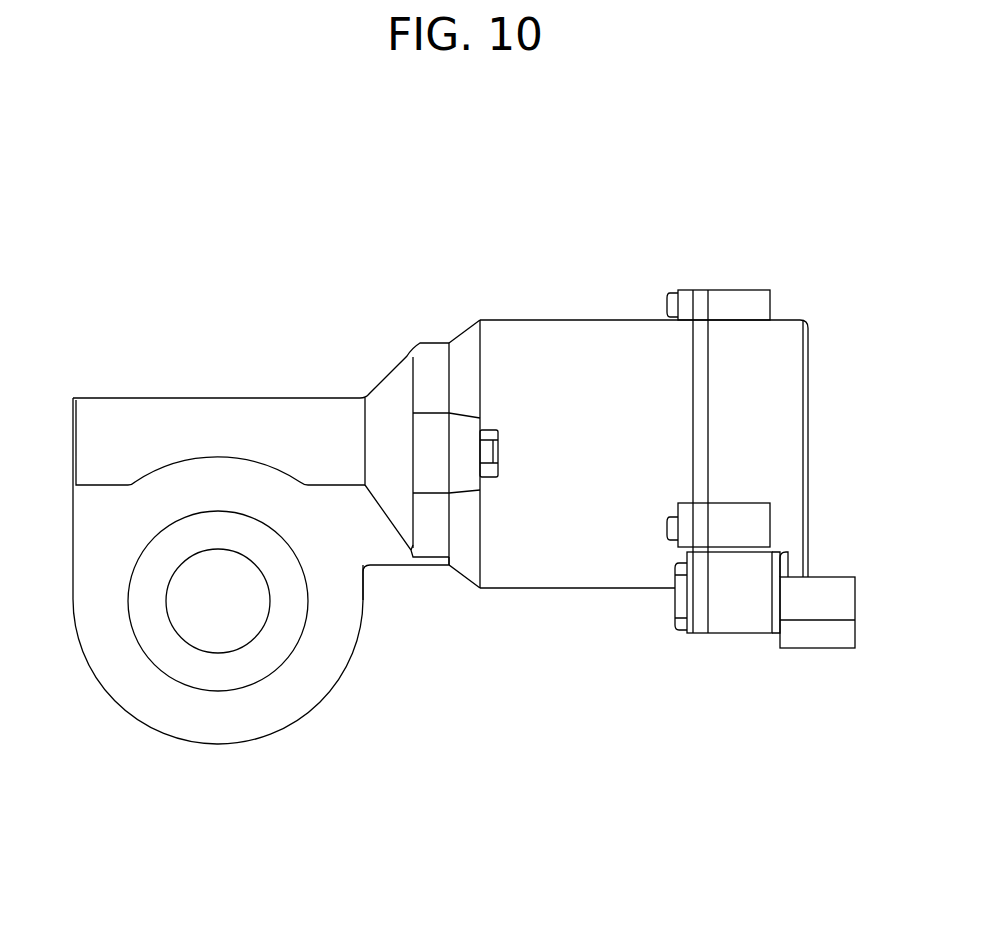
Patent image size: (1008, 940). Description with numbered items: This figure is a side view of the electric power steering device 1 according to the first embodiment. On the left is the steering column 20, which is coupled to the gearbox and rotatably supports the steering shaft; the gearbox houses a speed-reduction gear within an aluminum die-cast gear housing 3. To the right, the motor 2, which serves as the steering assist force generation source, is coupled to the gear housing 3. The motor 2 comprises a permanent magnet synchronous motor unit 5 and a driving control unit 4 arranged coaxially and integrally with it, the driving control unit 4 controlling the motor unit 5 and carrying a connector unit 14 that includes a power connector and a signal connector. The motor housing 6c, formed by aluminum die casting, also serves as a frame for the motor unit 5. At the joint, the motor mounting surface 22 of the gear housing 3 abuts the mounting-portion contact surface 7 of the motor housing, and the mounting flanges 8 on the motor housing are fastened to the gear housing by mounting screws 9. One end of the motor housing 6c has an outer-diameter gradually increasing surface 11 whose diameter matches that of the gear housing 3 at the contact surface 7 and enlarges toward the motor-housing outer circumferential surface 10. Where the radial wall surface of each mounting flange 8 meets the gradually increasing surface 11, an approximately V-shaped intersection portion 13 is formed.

The electric power steering device 1 is at (447, 708).
The motor 2 is at (525, 700).
The gear housing 3 is at (432, 353).
The driving control unit 4 is at (743, 340).
The motor unit 5 is at (553, 338).
The motor housing 6c is at (492, 390).
The mounting-portion contact surface 7 is at (448, 533).
The mounting flanges 8 is at (466, 470).
The mounting screws 9 is at (495, 430).
The motor-housing outer circumferential surface 10 is at (503, 362).
The outer-diameter gradually increasing surface 11 is at (458, 367).
The intersection portion 13 is at (407, 355).
The connector unit 14 is at (740, 623).
The steering column 20 is at (248, 415).
The motor mounting surface 22 is at (460, 410).